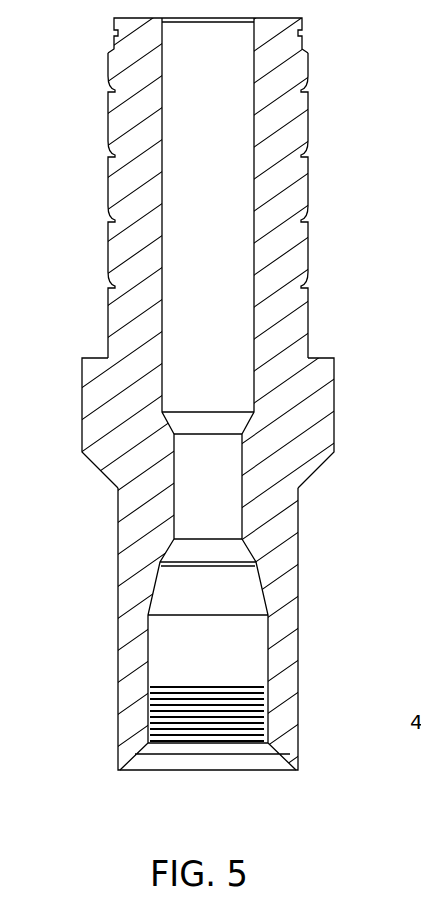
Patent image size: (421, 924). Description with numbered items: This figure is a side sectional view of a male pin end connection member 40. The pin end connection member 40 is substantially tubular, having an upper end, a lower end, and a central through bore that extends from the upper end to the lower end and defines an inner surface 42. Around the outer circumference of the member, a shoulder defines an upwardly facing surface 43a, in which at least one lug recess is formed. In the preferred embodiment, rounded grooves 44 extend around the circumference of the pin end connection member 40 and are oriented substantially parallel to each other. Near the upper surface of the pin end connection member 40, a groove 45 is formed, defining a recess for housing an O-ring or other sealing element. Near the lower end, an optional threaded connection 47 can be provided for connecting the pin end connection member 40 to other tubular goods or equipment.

The pin end connection member 40 is at (112, 704).
The inner surface 42 is at (172, 479).
The upwardly facing surface 43a is at (323, 355).
The rounded grooves 44 is at (108, 93).
The groove 45 is at (297, 33).
The threaded connection 47 is at (219, 743).